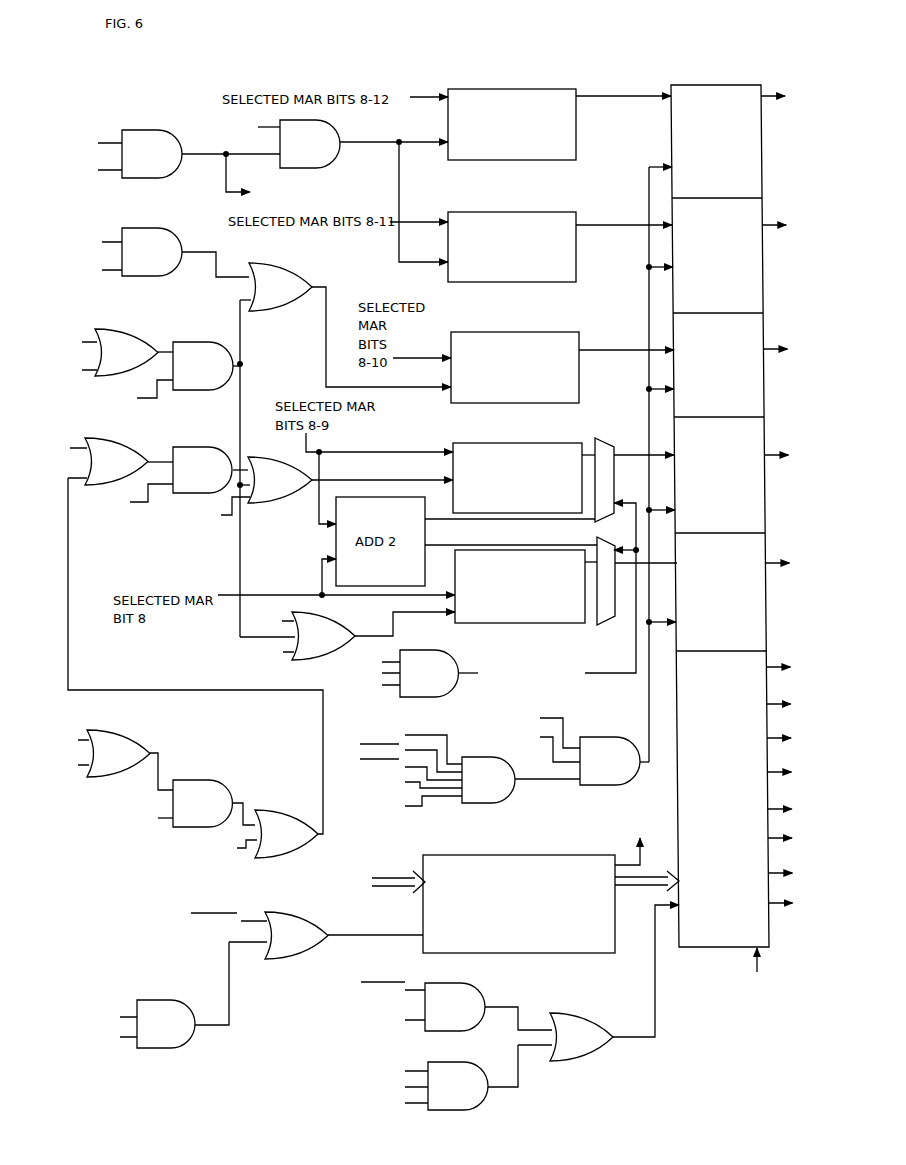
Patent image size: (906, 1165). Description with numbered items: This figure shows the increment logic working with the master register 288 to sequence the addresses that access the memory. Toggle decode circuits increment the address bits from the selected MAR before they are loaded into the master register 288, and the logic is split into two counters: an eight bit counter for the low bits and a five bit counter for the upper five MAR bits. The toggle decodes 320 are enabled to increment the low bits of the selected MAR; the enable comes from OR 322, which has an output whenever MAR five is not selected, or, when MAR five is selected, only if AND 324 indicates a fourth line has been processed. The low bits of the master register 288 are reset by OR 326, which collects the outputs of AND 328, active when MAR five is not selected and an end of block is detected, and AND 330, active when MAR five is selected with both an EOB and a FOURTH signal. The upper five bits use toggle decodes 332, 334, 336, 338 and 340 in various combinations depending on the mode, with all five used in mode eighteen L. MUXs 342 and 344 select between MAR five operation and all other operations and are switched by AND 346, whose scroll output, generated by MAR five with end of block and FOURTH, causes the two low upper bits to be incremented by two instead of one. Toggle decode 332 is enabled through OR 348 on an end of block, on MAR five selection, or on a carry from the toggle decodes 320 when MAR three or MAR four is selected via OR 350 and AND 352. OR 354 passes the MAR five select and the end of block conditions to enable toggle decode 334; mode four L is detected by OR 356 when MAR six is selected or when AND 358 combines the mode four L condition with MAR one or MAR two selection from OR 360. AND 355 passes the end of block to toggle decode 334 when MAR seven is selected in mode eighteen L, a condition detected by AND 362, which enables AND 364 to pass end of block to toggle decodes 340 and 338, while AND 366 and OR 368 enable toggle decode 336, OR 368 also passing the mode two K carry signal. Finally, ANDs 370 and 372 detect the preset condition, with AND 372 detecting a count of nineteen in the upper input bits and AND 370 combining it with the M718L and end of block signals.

The master register 288 is at (700, 85).
The toggle decodes 320 is at (421, 946).
The OR gate 322 is at (305, 957).
The AND gate 324 is at (188, 1044).
The OR gate 326 is at (580, 1014).
The AND gate 328 is at (468, 983).
The AND gate 330 is at (478, 1105).
The toggle decode 332 is at (555, 549).
The toggle decode 334 is at (548, 442).
The toggle decode 336 is at (543, 331).
The toggle decode 338 is at (540, 211).
The toggle decode 340 is at (538, 88).
The multiplexer 342 is at (600, 628).
The multiplexer 344 is at (610, 440).
The AND gate 346 is at (448, 692).
The OR gate 348 is at (343, 609).
The OR gate 350 is at (120, 331).
The AND gate 352 is at (200, 342).
The OR gate 354 is at (290, 503).
The AND gate 355 is at (200, 447).
The OR gate 356 is at (272, 810).
The AND gate 358 is at (195, 780).
The OR gate 360 is at (125, 731).
The AND gate 362 is at (178, 172).
The AND gate 364 is at (335, 162).
The AND gate 366 is at (158, 236).
The OR gate 368 is at (292, 270).
The AND gate 370 is at (628, 782).
The AND gate 372 is at (508, 800).